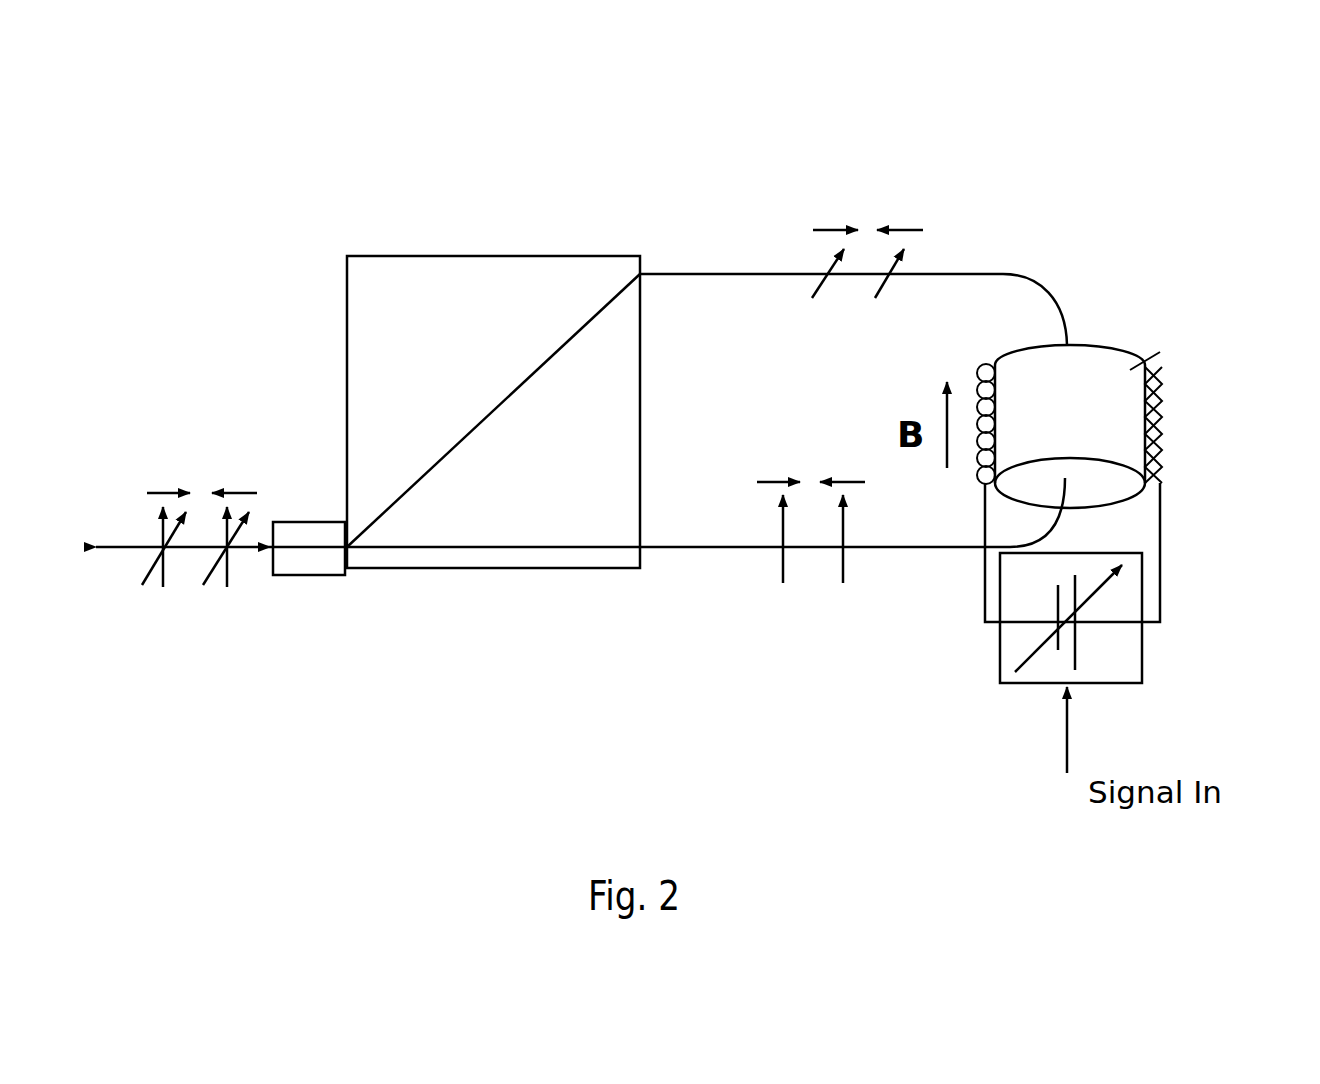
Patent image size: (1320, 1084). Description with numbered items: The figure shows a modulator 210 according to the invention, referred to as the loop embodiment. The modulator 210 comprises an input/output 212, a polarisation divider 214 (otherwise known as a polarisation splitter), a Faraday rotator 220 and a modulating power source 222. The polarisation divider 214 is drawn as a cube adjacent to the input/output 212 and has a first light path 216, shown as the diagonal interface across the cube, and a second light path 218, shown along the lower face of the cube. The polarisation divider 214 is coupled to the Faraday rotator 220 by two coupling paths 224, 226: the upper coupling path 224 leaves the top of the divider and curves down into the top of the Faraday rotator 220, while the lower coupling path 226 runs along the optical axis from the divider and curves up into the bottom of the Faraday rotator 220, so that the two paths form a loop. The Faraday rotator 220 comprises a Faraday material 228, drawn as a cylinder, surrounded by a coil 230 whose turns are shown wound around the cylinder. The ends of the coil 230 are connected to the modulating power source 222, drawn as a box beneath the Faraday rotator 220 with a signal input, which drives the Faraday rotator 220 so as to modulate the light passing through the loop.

The modulator 210 is at (1047, 162).
The input/output 212 is at (290, 575).
The polarisation divider 214 is at (385, 568).
The first light path 216 is at (467, 436).
The second light path 218 is at (545, 546).
The Faraday rotator 220 is at (1146, 347).
The modulating power source 222 is at (1143, 653).
The coupling path 224 is at (738, 273).
The coupling path 226 is at (688, 548).
The Faraday material 228 is at (1143, 365).
The coil 230 is at (1160, 437).